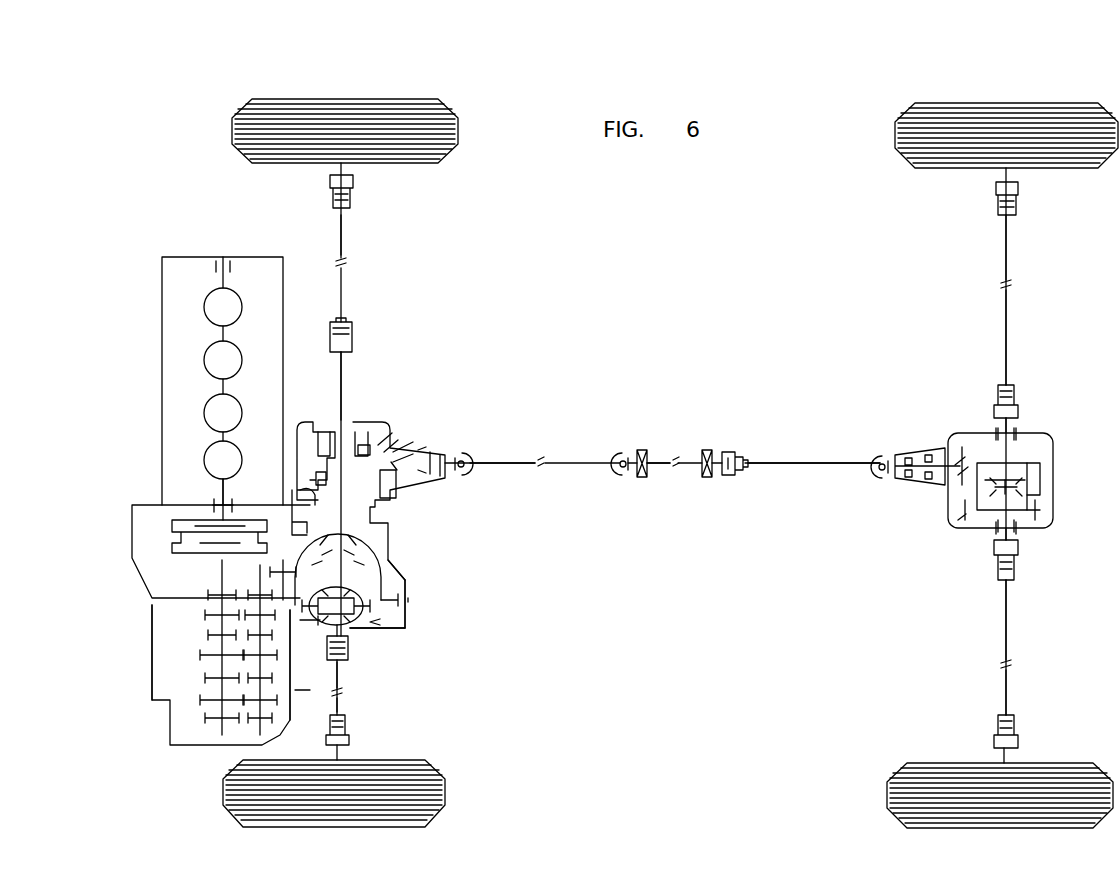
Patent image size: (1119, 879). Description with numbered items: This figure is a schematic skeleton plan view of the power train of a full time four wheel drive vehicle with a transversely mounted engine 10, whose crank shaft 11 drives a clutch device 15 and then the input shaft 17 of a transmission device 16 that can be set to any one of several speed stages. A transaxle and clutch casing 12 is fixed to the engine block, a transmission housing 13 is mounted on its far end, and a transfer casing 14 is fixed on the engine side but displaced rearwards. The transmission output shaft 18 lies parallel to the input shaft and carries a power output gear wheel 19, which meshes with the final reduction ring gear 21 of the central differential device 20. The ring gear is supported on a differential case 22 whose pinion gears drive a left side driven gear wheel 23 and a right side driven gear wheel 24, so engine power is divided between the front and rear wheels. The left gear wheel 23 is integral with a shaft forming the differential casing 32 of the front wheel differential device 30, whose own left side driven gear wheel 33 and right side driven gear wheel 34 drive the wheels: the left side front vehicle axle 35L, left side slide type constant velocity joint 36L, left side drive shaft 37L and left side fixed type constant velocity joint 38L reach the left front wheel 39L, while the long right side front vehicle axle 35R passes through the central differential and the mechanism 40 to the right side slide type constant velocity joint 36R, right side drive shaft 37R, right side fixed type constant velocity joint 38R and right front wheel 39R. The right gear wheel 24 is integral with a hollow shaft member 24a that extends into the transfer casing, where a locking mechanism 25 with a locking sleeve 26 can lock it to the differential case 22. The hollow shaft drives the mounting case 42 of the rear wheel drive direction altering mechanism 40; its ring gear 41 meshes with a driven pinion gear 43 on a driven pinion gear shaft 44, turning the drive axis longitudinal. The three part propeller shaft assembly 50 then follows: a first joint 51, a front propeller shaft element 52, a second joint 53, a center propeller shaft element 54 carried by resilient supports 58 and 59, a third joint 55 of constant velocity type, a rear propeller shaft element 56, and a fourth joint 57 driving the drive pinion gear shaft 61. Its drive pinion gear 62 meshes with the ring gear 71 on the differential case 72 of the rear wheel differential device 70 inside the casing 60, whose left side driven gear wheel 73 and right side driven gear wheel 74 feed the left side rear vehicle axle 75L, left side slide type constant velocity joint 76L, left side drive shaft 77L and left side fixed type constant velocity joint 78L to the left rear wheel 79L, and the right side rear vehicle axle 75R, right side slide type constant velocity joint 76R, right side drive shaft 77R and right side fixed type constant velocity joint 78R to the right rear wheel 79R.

The engine 10 is at (159, 372).
The crank shaft 11 is at (215, 490).
The transaxle and clutch casing 12 is at (125, 572).
The transmission housing 13 is at (150, 720).
The transfer casing 14 is at (300, 418).
The clutch device 15 is at (156, 508).
The transmission device 16 is at (170, 645).
The input shaft 17 is at (218, 626).
The output shaft 18 is at (295, 688).
The power output gear wheel 19 is at (250, 578).
The central differential device 20 is at (378, 558).
The final reduction ring gear 21 is at (410, 600).
The differential case 22 is at (392, 572).
The left side driven gear wheel 23 is at (406, 590).
The right side driven gear wheel 24 is at (345, 545).
The hollow shaft member 24a is at (298, 488).
The locking mechanism 25 is at (398, 488).
The locking sleeve 26 is at (310, 478).
The front wheel differential device 30 is at (395, 632).
The differential casing 32 is at (355, 628).
The left side driven gear wheel 33 is at (325, 630).
The right side driven gear wheel 34 is at (290, 572).
The right side front vehicle axle 35R is at (343, 366).
The left side front vehicle axle 35L is at (342, 632).
The right side slide type constant velocity joint 36R is at (330, 338).
The left side slide type constant velocity joint 36L is at (348, 650).
The right side drive shaft 37R is at (339, 242).
The left side drive shaft 37L is at (340, 703).
The right side fixed type constant velocity joint 38R is at (353, 182).
The left side fixed type constant velocity joint 38L is at (349, 740).
The right front wheel 39R is at (458, 118).
The left front wheel 39L is at (445, 792).
The rear wheel drive direction altering mechanism 40 is at (385, 420).
The ring gear 41 is at (318, 425).
The mounting case 42 is at (370, 425).
The driven pinion gear 43 is at (395, 435).
The driven pinion gear shaft 44 is at (452, 448).
The three part propeller shaft assembly 50 is at (695, 405).
The first joint 51 is at (470, 470).
The front propeller shaft element 52 is at (535, 460).
The second joint 53 is at (618, 476).
The center propeller shaft element 54 is at (660, 465).
The third joint 55 is at (735, 476).
The rear propeller shaft element 56 is at (800, 460).
The fourth joint 57 is at (878, 480).
The support 58 is at (645, 448).
The support 59 is at (710, 448).
The casing 60 is at (961, 418).
The drive pinion gear shaft 61 is at (905, 448).
The drive pinion gear 62 is at (955, 480).
The rear wheel differential device 70 is at (958, 520).
The ring gear 71 is at (1035, 490).
The differential case 72 is at (1030, 462).
The left side driven gear wheel 73 is at (1040, 515).
The right side driven gear wheel 74 is at (985, 462).
The right side rear vehicle axle 75R is at (1016, 428).
The left side rear vehicle axle 75L is at (1016, 538).
The right side slide type constant velocity joint 76R is at (1016, 395).
The left side slide type constant velocity joint 76L is at (996, 552).
The right side drive shaft 77R is at (1008, 325).
The left side drive shaft 77L is at (1008, 620).
The right side fixed type constant velocity joint 78R is at (996, 190).
The left side fixed type constant velocity joint 78L is at (994, 740).
The right rear wheel 79R is at (895, 130).
The left rear wheel 79L is at (887, 800).